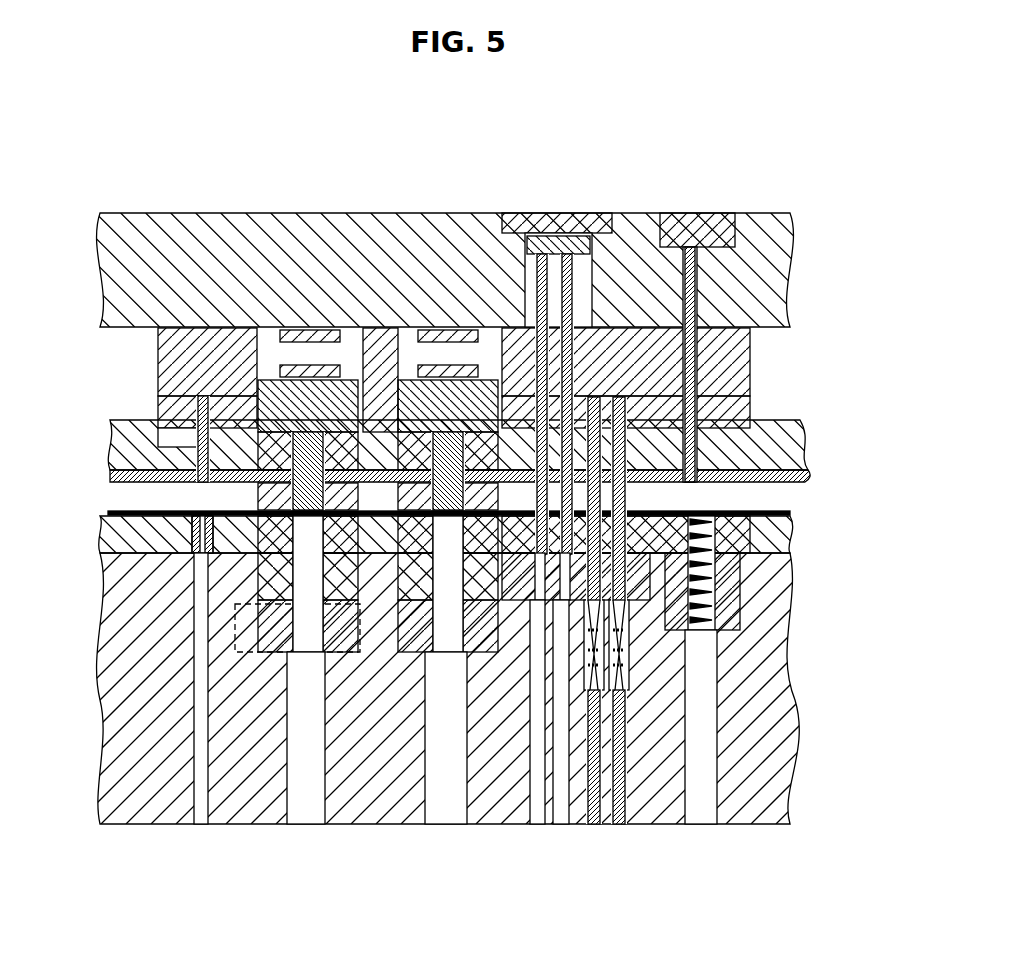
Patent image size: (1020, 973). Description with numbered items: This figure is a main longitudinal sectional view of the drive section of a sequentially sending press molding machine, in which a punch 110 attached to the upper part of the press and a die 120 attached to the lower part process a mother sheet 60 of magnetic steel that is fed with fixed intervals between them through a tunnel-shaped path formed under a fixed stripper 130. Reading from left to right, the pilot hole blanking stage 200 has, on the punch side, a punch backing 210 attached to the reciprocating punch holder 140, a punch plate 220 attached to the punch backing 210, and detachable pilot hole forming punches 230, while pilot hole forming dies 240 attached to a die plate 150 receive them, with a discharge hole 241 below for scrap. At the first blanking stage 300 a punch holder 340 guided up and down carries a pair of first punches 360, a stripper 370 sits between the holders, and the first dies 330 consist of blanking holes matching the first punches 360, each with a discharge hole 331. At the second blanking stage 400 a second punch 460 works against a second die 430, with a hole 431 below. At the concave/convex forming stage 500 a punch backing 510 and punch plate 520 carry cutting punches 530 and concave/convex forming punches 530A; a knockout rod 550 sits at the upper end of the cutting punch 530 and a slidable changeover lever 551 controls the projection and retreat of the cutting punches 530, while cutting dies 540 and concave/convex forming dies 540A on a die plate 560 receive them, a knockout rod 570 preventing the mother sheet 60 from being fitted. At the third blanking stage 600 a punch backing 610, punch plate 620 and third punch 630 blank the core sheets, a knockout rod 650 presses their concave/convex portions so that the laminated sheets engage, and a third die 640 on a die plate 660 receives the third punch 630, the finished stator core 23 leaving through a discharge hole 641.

The stator core 23 is at (718, 607).
The mother sheet 60 is at (790, 512).
The punch 110 is at (467, 268).
The die 120 is at (800, 642).
The fixed stripper 130 is at (813, 445).
The punch holder 140 is at (99, 241).
The die plate 150 is at (100, 553).
The pilot hole blanking stage 200 is at (159, 213).
The punch backing 210 is at (157, 346).
The punch plate 220 is at (157, 406).
The pilot hole forming punches 230 is at (195, 441).
The pilot hole forming dies 240 is at (188, 528).
The discharge hole 241 is at (202, 826).
The first blanking stage 300 is at (363, 213).
The first dies 330 is at (258, 580).
The discharge hole 331 is at (306, 826).
The punch holder 340 is at (258, 378).
The first punches 360 is at (303, 438).
The stripper 370 is at (258, 500).
The second blanking stage 400 is at (502, 213).
The second die 430 is at (433, 560).
The hole 431 is at (447, 826).
The second punch 460 is at (443, 438).
The concave/convex forming stage 500 is at (644, 213).
The punch backing 510 is at (686, 362).
The punch plate 520 is at (681, 409).
The cutting punches 530 is at (538, 425).
The concave/convex forming punches 530A is at (622, 470).
The cutting dies 540 is at (518, 600).
The concave/convex forming dies 540A is at (633, 600).
The knockout rod 550 is at (520, 213).
The changeover lever 551 is at (553, 236).
The die plate 560 is at (692, 534).
The knockout rod 570 is at (617, 826).
The third blanking stage 600 is at (735, 213).
The punch backing 610 is at (752, 350).
The punch plate 620 is at (752, 406).
The third punch 630 is at (707, 461).
The third die 640 is at (767, 555).
The discharge hole 641 is at (702, 826).
The knockout rod 650 is at (697, 270).
The die plate 660 is at (790, 537).